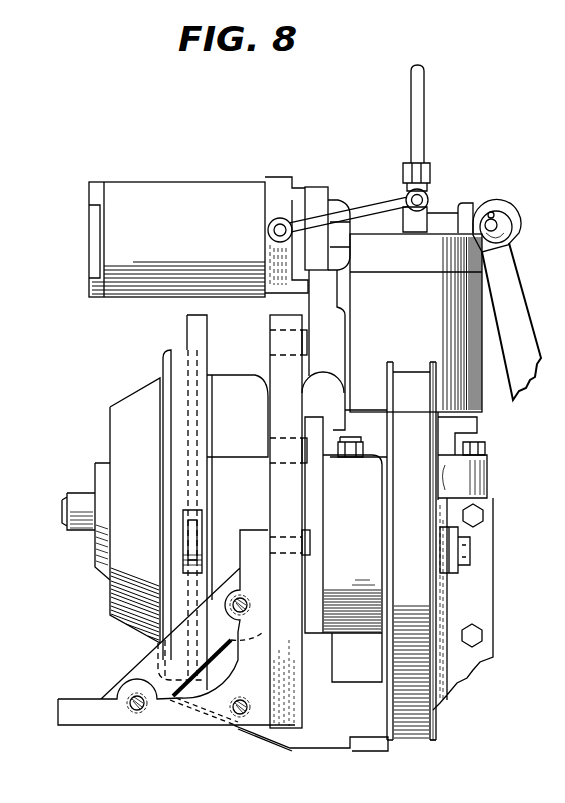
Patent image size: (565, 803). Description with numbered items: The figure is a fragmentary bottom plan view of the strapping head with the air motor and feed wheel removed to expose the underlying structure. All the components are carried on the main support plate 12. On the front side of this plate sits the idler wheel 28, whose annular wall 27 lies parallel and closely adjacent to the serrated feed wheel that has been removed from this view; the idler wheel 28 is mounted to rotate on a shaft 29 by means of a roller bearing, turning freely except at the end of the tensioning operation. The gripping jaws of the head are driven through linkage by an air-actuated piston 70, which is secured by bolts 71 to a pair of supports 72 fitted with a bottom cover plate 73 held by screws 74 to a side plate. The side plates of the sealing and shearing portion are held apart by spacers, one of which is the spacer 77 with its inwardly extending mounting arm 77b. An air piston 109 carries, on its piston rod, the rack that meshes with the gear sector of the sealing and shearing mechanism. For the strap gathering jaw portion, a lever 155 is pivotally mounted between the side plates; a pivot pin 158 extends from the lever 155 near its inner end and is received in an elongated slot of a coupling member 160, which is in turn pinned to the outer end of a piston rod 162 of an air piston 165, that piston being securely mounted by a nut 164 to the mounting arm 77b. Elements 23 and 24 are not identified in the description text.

The main support plate 12 is at (290, 705).
The base plate 23 is at (172, 716).
The gusset bracket 24 is at (138, 672).
The annular wall 27 is at (411, 738).
The idler wheel 28 is at (437, 735).
The shaft 29 is at (471, 552).
The air-actuated piston 70 is at (472, 398).
The bolts 71 is at (351, 440).
The supports 72 is at (489, 478).
The bottom cover plate 73 is at (480, 600).
The screws 74 is at (483, 635).
The spacer 77 is at (332, 348).
The mounting arm 77b is at (316, 195).
The air piston 109 is at (123, 410).
The lever 155 is at (535, 300).
The pivot pin 158 is at (478, 215).
The coupling member 160 is at (506, 212).
The piston rod 162 is at (370, 225).
The nut 164 is at (341, 203).
The air piston 165 is at (185, 190).